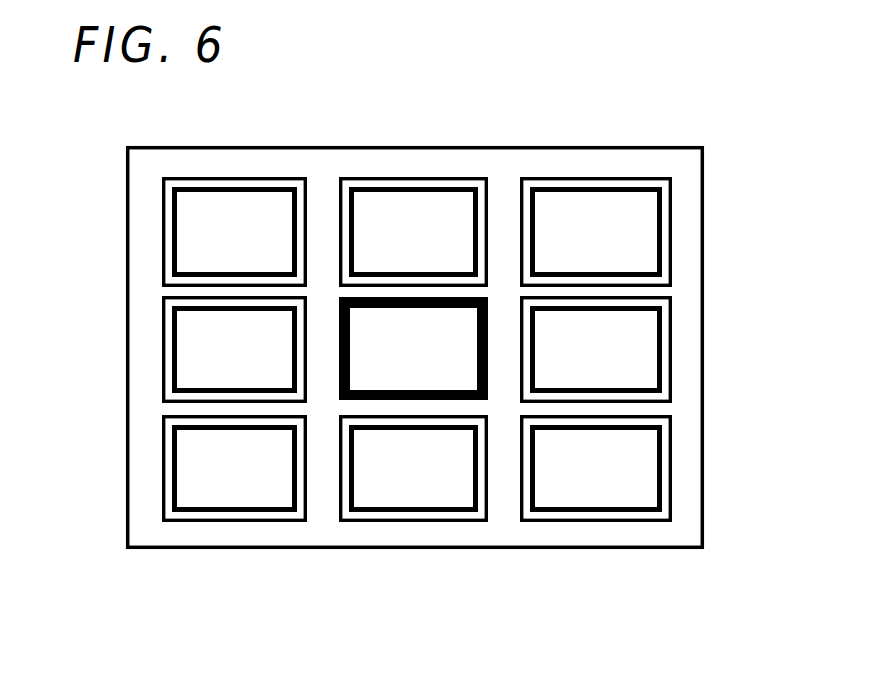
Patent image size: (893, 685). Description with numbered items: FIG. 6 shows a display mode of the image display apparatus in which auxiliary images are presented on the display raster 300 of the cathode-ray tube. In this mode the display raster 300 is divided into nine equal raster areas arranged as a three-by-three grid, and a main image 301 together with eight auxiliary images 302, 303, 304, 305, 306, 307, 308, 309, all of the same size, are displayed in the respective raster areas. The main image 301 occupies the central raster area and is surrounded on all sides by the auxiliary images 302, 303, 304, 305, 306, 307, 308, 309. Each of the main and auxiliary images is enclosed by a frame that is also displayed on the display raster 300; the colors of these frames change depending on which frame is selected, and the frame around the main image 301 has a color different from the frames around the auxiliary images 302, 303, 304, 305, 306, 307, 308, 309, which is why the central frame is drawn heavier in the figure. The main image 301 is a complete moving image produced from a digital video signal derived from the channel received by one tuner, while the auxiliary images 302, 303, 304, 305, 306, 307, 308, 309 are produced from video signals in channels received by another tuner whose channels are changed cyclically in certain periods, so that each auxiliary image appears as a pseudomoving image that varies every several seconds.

The display raster 300 is at (595, 552).
The main image 301 is at (490, 312).
The auxiliary image 302 is at (218, 183).
The auxiliary image 303 is at (392, 183).
The auxiliary image 304 is at (625, 178).
The auxiliary image 305 is at (162, 336).
The auxiliary image 306 is at (672, 350).
The auxiliary image 307 is at (162, 469).
The auxiliary image 308 is at (412, 520).
The auxiliary image 309 is at (672, 481).